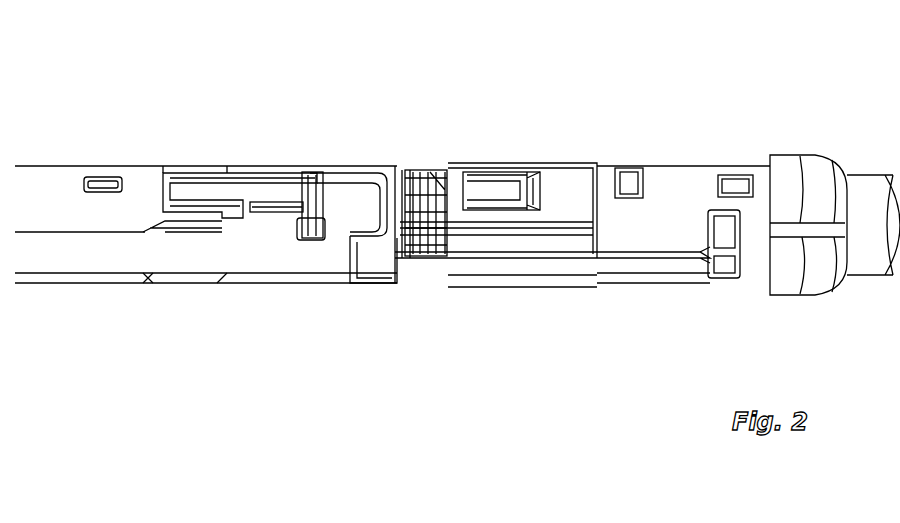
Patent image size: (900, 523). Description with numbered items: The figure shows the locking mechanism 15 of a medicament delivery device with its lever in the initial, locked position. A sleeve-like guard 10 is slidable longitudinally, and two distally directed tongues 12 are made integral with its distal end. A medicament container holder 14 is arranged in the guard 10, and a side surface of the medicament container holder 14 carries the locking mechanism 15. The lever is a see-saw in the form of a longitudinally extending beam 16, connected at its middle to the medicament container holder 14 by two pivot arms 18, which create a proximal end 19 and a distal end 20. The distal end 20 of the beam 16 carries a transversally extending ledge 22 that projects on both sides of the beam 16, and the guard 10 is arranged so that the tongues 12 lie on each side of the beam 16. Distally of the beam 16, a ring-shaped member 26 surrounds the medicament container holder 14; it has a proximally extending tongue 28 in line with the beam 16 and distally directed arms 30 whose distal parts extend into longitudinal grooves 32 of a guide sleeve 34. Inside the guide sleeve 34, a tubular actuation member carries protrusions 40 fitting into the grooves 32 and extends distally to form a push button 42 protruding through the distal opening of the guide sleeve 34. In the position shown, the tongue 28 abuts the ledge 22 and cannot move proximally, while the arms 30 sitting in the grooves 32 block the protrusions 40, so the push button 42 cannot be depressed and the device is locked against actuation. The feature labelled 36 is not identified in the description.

The guard 10 is at (64, 160).
The distally directed tongues 12 is at (188, 212).
The medicament container holder 14 is at (284, 257).
The locking mechanism 15 is at (279, 308).
The beam 16 is at (248, 182).
The pivot arms 18 is at (247, 210).
The proximal end 19 is at (195, 190).
The distal end 20 is at (282, 192).
The ledge 22 is at (312, 183).
The ring-shaped member 26 is at (370, 267).
The proximally extending tongue 28 is at (362, 183).
The distally directed arms 30 is at (547, 265).
The longitudinal grooves 32 is at (617, 253).
The guide sleeve 34 is at (700, 190).
The latch 36 is at (723, 223).
The protrusions 40 is at (727, 265).
The push button 42 is at (873, 188).